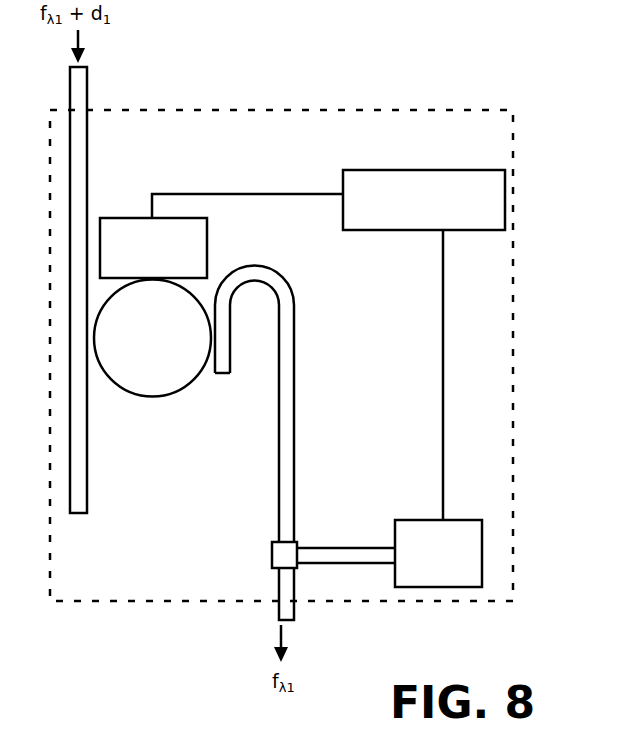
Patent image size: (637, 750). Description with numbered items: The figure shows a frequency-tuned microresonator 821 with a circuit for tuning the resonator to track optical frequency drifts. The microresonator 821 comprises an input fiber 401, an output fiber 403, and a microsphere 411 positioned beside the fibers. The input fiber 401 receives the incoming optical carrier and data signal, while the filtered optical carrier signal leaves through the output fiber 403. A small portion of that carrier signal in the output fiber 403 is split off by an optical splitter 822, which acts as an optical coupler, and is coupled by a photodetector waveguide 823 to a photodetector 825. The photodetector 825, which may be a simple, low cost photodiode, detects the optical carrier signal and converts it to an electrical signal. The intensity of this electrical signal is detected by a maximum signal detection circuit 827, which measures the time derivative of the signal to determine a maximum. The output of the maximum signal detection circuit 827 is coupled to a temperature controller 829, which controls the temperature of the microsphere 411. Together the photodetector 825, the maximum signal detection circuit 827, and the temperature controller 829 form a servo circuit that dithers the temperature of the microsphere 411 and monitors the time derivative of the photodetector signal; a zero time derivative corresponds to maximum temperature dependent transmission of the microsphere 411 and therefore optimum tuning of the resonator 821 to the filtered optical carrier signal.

The input fiber 401 is at (88, 138).
The output fiber 403 is at (278, 482).
The microsphere 411 is at (158, 397).
The frequency-tuned microresonator 821 is at (250, 110).
The optical splitter 822 is at (296, 542).
The photodetector waveguide 823 is at (378, 548).
The photodetector 825 is at (425, 520).
The maximum signal detection circuit 827 is at (413, 230).
The temperature controller 829 is at (207, 224).